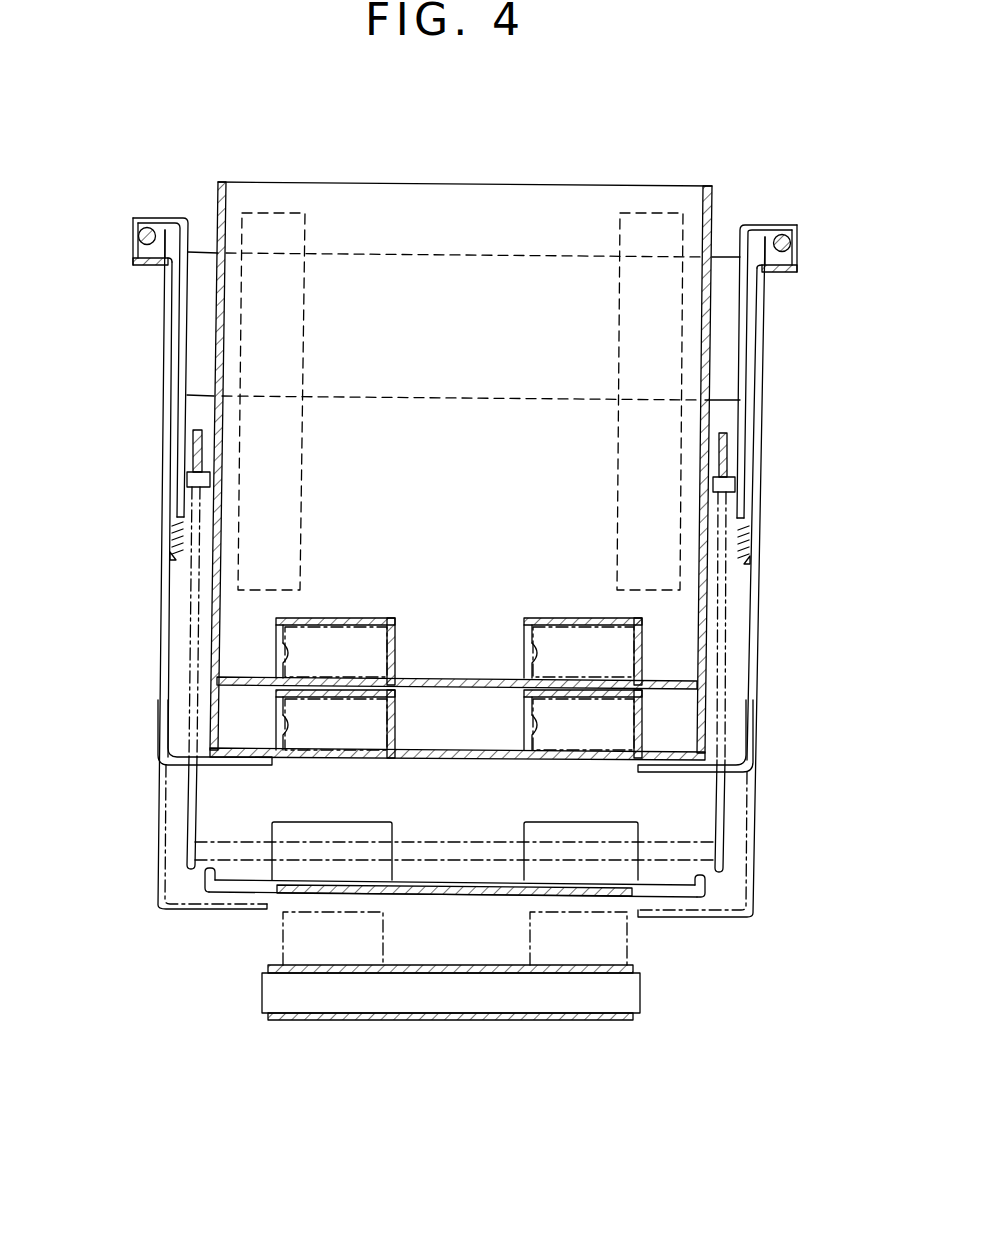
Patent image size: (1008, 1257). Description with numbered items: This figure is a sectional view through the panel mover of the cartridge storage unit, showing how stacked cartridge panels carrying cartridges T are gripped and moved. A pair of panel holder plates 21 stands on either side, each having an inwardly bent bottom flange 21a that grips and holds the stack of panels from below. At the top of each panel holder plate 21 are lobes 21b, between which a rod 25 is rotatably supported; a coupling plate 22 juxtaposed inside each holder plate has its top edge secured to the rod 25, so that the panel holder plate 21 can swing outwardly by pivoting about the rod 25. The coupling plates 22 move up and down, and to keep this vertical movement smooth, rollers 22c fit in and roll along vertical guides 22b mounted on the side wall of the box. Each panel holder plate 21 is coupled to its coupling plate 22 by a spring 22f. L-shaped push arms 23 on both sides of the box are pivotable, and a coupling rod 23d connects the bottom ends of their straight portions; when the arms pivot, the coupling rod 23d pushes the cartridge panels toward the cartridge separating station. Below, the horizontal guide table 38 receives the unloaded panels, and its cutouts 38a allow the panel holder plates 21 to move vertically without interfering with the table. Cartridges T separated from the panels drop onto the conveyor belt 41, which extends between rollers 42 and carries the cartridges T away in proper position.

The panel holder plate 21 is at (163, 560).
The bottom flange 21a is at (222, 763).
The lobe 21b is at (138, 256).
The coupling plate 22 is at (165, 390).
The vertical guide 22b is at (297, 478).
The roller 22c is at (735, 483).
The spring 22f is at (177, 525).
The push arm 23 is at (722, 679).
The coupling rod 23d is at (705, 858).
The rod 25 is at (138, 237).
The horizontal guide table 38 is at (460, 926).
The cutout 38a is at (678, 897).
The conveyor belt 41 is at (455, 962).
The roller 42 is at (410, 1025).
The cartridge T is at (375, 707).